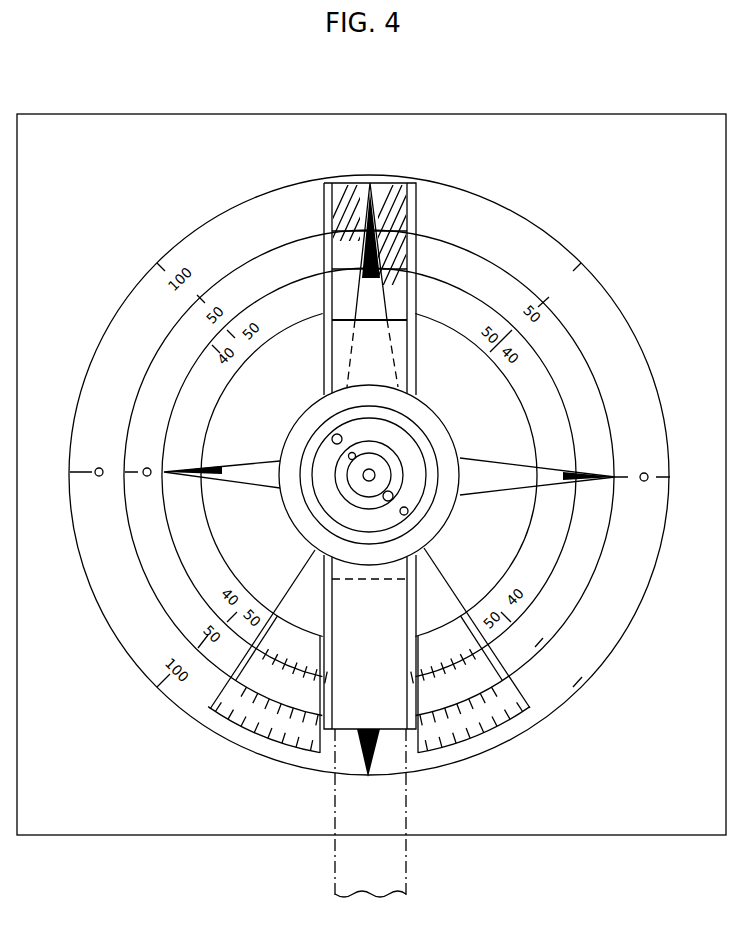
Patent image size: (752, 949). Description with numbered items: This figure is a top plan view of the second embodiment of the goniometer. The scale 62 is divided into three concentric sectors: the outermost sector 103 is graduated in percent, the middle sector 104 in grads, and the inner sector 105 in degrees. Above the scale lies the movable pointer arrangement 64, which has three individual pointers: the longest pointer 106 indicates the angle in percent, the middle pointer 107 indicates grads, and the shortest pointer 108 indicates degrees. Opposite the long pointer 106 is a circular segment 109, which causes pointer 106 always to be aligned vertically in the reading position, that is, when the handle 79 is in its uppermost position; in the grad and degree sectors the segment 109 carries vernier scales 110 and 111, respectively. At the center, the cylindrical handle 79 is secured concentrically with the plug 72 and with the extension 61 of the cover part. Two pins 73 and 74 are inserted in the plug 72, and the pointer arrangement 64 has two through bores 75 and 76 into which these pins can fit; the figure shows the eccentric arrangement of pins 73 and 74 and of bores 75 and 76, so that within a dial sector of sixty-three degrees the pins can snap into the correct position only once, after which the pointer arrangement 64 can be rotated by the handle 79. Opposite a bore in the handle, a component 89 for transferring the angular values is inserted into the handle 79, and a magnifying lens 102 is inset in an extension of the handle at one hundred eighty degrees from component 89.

The scale 62 is at (622, 302).
The movable pointer arrangement 64 is at (244, 648).
The magnifying lens 102 is at (393, 200).
The outermost sector 103 is at (585, 357).
The middle sector 104 is at (566, 410).
The inner sector 105 is at (518, 398).
The longest pointer 106 is at (363, 212).
The middle pointer 107 is at (502, 473).
The shortest pointer 108 is at (250, 473).
The circular segment 109 is at (268, 703).
The vernier scale 110 is at (503, 712).
The vernier scale 111 is at (458, 660).
The cylindrical handle 79 is at (320, 412).
The pin 73 is at (332, 435).
The through bore 75 is at (349, 459).
The plug 72 is at (326, 519).
The pin 74 is at (393, 497).
The extension 61 is at (423, 512).
The through bore 76 is at (410, 515).
The component for transferring the angular values 89 is at (392, 808).